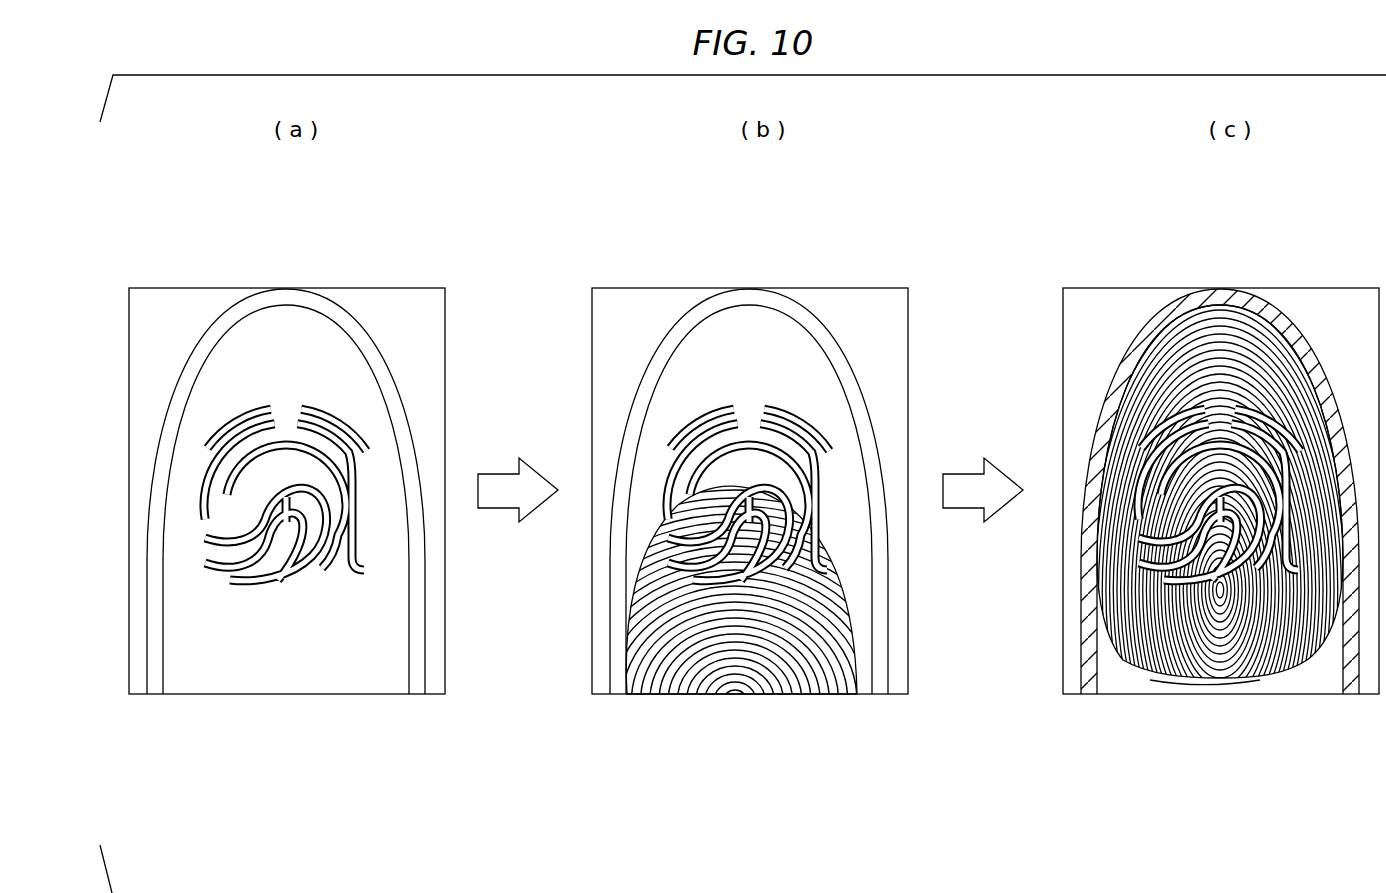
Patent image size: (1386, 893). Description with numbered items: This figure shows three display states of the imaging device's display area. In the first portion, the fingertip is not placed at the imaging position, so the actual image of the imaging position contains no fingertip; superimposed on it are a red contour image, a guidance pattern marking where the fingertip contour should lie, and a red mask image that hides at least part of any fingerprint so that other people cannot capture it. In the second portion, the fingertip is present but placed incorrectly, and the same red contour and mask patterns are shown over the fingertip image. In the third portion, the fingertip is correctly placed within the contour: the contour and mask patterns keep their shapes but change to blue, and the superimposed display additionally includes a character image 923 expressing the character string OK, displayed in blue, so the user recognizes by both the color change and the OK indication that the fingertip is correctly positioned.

The character image 923 is at (1223, 664).